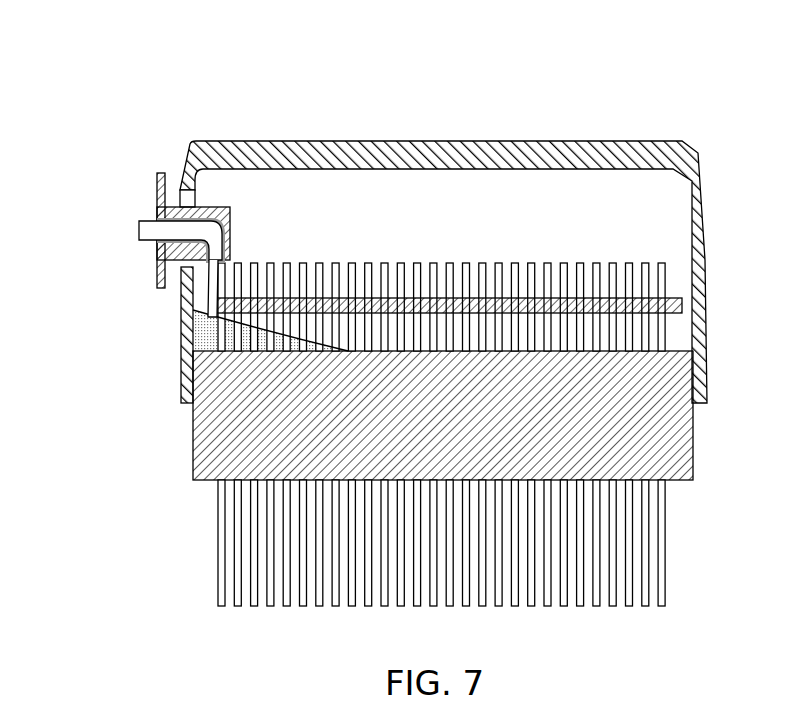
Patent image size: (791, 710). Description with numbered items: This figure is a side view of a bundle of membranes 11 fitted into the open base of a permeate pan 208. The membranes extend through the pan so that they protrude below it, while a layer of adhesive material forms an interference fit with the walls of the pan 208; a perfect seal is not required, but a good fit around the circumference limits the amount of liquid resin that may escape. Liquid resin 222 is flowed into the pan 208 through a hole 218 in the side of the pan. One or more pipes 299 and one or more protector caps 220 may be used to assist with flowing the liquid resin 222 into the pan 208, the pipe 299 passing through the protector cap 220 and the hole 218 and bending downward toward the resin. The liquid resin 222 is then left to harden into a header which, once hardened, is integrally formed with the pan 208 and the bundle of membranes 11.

The permeate pan 208 is at (367, 140).
The bundle of membranes 11 is at (582, 243).
The pipe 299 is at (138, 218).
The hole 218 is at (180, 190).
The protector cap 220 is at (157, 263).
The liquid resin 222 is at (207, 332).